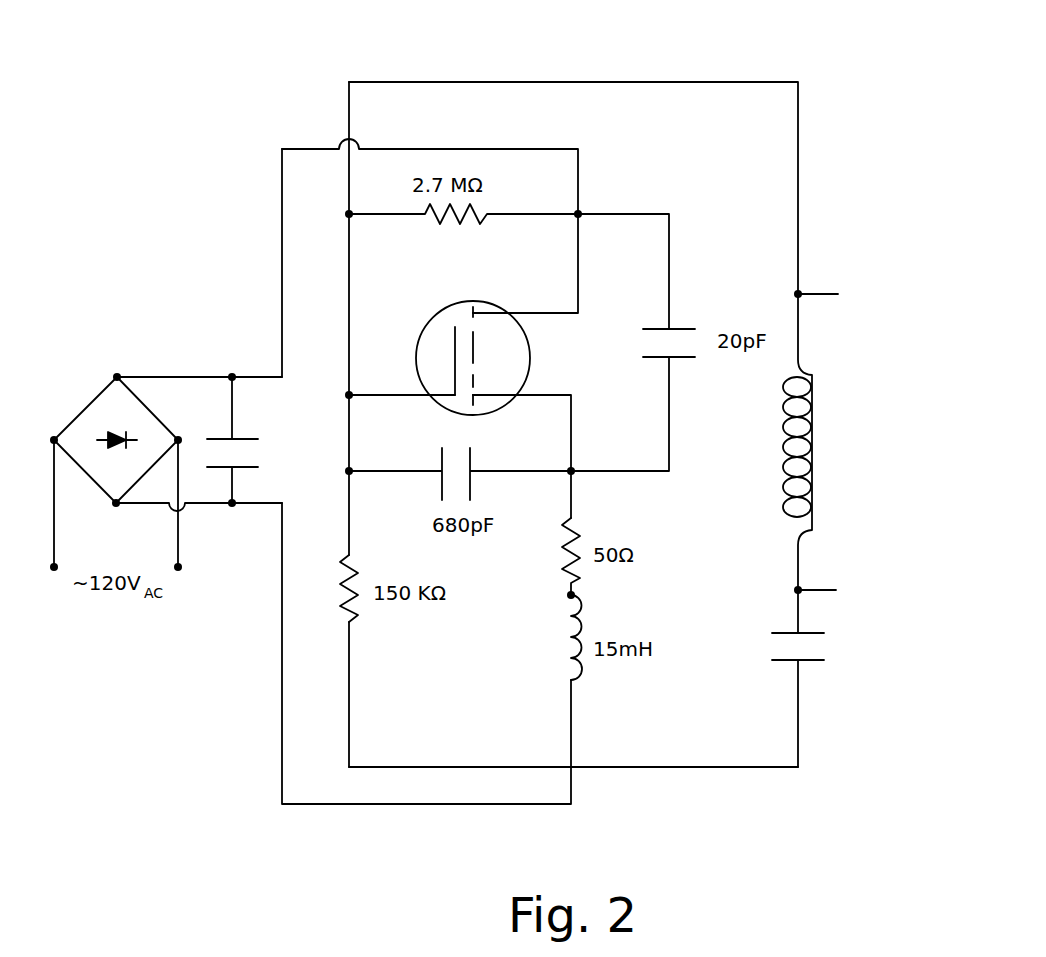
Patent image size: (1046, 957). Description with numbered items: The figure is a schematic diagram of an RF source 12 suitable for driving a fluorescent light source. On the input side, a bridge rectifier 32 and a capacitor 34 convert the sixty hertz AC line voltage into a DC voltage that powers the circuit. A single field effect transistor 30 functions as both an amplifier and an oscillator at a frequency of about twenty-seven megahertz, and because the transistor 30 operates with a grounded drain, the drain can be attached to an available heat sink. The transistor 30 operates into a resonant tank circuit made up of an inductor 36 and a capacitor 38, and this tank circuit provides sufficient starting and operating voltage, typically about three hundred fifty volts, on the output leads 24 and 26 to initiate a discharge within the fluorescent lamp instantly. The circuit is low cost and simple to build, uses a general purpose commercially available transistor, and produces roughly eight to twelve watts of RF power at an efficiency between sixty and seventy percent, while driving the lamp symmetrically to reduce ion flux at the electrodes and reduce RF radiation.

The RF source 12 is at (535, 62).
The output lead 24 is at (812, 293).
The output lead 26 is at (816, 588).
The field effect transistor 30 is at (427, 323).
The bridge rectifier 32 is at (93, 400).
The capacitor 34 is at (232, 418).
The inductor 36 is at (784, 413).
The capacitor 38 is at (778, 631).